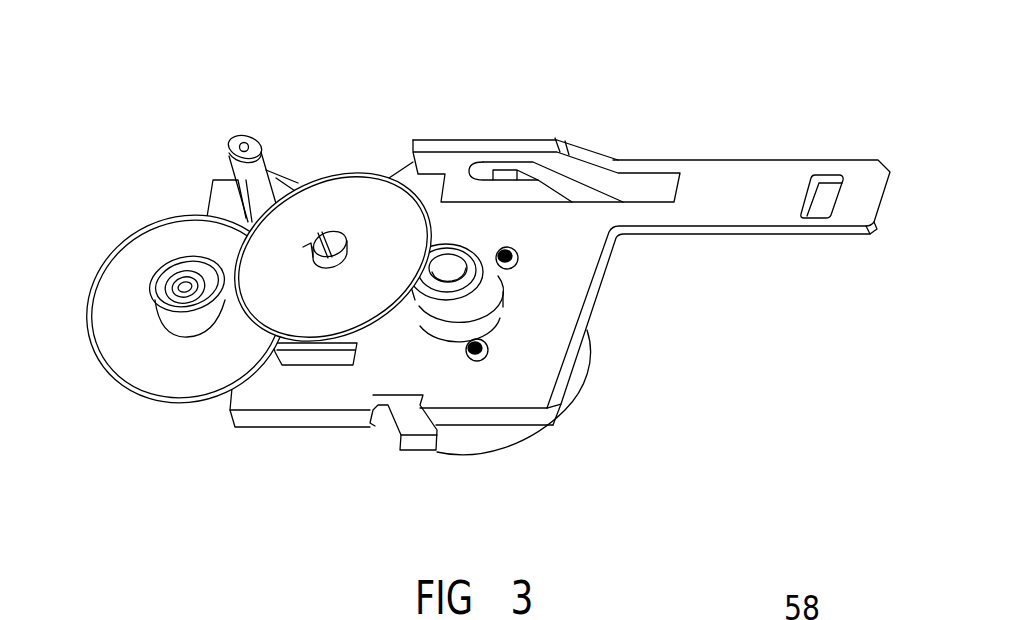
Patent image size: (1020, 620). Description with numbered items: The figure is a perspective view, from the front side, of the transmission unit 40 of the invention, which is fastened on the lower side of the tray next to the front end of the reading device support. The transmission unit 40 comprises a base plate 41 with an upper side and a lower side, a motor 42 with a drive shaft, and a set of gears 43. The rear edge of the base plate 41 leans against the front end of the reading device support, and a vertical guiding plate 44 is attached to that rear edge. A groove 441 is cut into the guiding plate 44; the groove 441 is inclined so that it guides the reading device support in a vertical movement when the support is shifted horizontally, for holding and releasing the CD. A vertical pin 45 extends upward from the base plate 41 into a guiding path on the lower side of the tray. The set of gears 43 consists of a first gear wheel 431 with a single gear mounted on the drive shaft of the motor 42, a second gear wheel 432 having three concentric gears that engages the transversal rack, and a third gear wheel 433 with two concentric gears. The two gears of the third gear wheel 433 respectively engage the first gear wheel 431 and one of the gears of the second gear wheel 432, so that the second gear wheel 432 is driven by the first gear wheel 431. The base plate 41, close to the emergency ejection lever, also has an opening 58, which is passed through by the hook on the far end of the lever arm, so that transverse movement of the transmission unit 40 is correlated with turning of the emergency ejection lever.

The transmission unit 40 is at (357, 473).
The base plate 41 is at (553, 298).
The motor 42 is at (492, 442).
The set of gears 43 is at (295, 360).
The first gear wheel 431 is at (470, 298).
The second gear wheel 432 is at (145, 353).
The third gear wheel 433 is at (342, 193).
The vertical guiding plate 44 is at (513, 143).
The groove 441 is at (557, 183).
The vertical pin 45 is at (238, 143).
The opening 58 is at (832, 193).